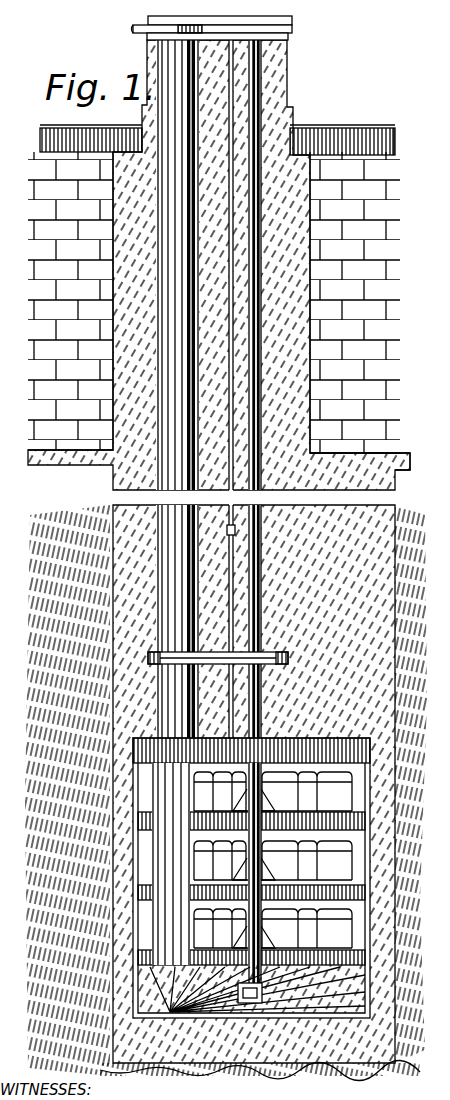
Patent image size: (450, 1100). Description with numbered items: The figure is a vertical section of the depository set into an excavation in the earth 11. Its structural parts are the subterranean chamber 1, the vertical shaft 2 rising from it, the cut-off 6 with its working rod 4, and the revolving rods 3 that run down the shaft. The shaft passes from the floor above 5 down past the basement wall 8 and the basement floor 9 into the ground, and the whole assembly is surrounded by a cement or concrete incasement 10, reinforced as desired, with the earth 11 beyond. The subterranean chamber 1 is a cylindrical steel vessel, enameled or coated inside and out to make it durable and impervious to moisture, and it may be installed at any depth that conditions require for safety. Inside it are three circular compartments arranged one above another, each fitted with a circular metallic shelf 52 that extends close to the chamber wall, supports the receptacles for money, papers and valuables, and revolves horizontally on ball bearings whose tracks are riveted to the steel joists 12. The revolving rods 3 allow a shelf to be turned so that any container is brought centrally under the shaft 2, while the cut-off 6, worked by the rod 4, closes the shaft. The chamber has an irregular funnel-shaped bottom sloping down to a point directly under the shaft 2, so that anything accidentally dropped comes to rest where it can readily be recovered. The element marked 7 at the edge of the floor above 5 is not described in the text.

The subterranean chamber 1 is at (367, 850).
The vertical shaft 2 is at (177, 389).
The revolving rods 3 is at (261, 66).
The working rod 4 is at (233, 88).
The floor above 5 is at (342, 131).
The cut-off 6 is at (148, 658).
The floor beam 7 is at (399, 141).
The basement wall 8 is at (360, 302).
The basement floor 9 is at (367, 464).
The cement or concrete incasement 10 is at (335, 615).
The earth 11 is at (408, 708).
The steel joists 12 is at (367, 826).
The circular metallic shelf 52 is at (367, 806).